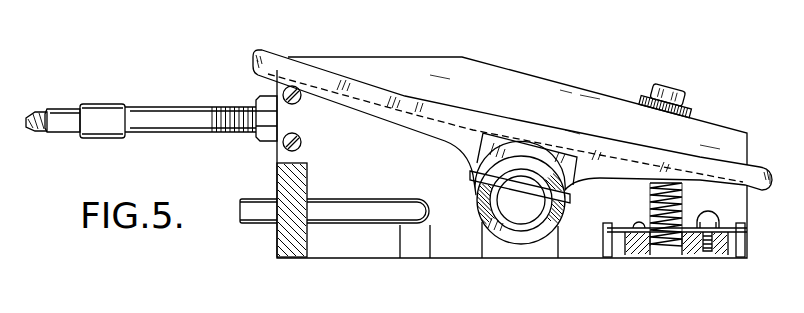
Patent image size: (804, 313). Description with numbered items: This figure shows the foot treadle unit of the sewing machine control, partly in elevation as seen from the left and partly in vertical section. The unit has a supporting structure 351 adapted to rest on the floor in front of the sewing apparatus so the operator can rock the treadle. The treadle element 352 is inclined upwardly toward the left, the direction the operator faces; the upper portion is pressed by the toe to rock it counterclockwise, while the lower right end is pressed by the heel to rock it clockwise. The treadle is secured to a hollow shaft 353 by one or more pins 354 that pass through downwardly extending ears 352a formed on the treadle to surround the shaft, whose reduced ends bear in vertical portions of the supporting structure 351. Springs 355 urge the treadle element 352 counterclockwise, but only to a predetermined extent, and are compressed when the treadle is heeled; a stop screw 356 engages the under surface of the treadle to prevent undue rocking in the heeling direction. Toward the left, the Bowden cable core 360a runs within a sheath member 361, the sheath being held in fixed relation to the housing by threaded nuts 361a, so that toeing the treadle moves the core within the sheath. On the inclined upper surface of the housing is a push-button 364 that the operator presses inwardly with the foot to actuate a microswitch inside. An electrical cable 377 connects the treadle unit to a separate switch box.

The supporting structure 351 is at (290, 238).
The treadle element 352 is at (305, 70).
The downwardly extending ears 352a is at (497, 232).
The hollow shaft 353 is at (518, 158).
The pins 354 is at (527, 198).
The springs 355 is at (663, 250).
The stop screw 356 is at (712, 213).
The Bowden cable core 360a is at (33, 112).
The sheath member 361 is at (160, 110).
The threaded nuts 361a is at (262, 104).
The push-button 364 is at (667, 95).
The electrical cable 377 is at (248, 203).